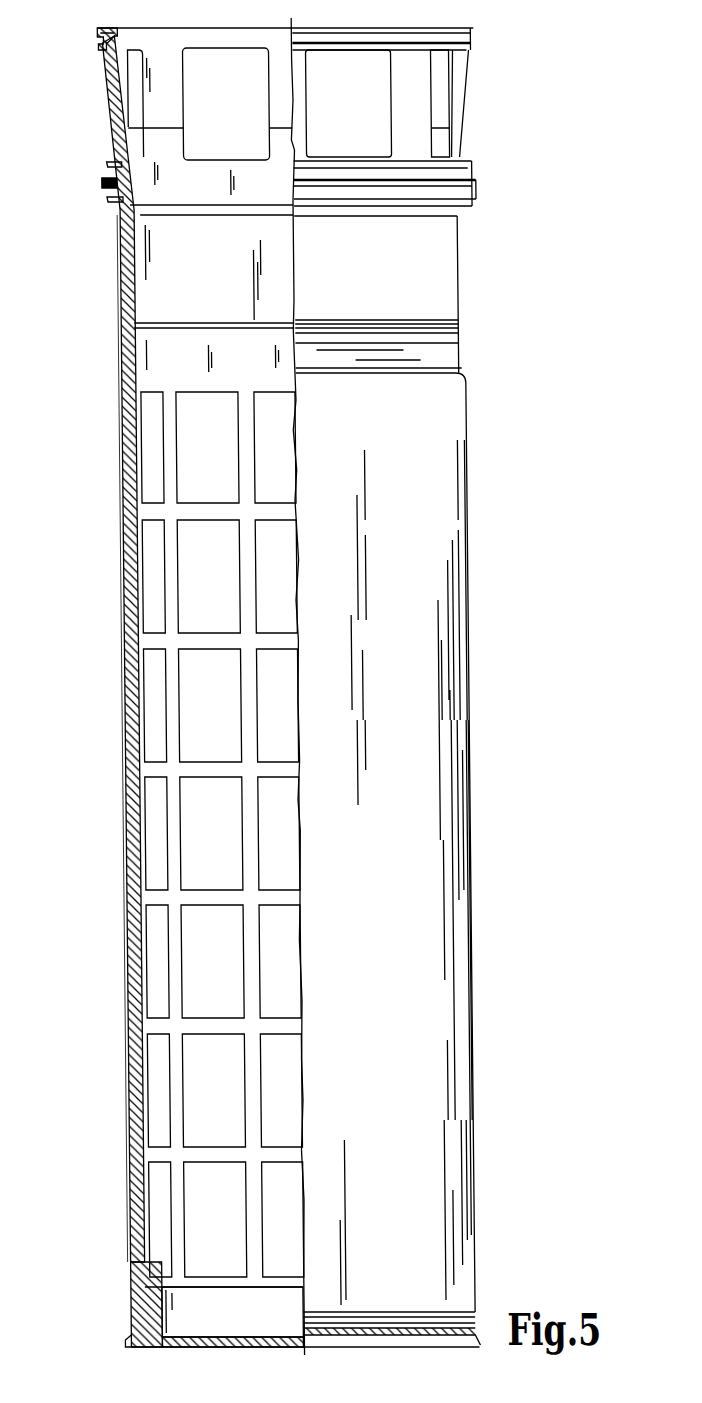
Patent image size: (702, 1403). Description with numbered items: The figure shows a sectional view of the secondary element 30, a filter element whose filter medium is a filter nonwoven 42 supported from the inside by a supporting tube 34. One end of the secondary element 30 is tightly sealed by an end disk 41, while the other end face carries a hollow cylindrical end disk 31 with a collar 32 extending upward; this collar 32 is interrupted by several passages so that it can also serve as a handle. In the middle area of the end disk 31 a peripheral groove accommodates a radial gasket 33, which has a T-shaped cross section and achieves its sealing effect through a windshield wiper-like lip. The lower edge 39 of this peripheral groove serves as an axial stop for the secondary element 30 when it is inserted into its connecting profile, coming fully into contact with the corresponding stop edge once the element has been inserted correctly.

The secondary element 30 is at (487, 540).
The hollow cylindrical end disk 31 is at (175, 284).
The collar 32 is at (126, 30).
The radial gasket 33 is at (85, 173).
The supporting tube 34 is at (150, 645).
The lower edge 39 is at (108, 206).
The end disk 41 is at (125, 1321).
The filter nonwoven 42 is at (120, 806).